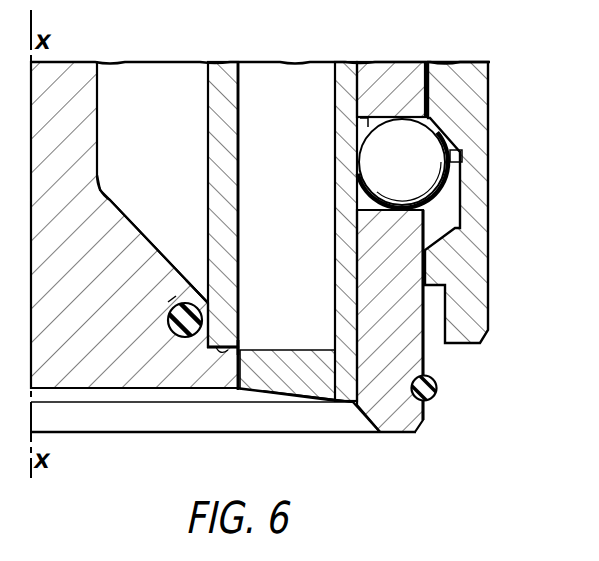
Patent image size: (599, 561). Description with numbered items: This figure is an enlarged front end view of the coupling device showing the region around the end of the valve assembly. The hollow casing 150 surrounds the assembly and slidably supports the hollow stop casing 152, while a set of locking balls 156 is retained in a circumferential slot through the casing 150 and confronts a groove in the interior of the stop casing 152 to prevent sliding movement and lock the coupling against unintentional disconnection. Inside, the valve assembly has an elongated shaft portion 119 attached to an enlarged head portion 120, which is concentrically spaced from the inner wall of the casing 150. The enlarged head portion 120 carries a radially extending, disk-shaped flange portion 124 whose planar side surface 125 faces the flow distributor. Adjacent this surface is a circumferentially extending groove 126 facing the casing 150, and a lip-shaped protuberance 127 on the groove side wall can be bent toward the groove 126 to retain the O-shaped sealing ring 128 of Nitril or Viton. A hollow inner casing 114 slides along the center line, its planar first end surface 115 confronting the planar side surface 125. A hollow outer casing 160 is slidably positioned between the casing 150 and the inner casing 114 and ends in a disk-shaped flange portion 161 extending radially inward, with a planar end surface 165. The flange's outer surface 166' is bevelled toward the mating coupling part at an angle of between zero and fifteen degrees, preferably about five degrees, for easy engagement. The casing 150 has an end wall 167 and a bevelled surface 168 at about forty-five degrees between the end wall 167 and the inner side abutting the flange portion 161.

The hollow inner casing 114 is at (240, 79).
The planar first end surface 115 is at (226, 344).
The elongated shaft portion 119 is at (108, 63).
The enlarged head portion 120 is at (138, 232).
The disk-shaped flange portion 124 is at (220, 367).
The planar side surface 125 is at (240, 349).
The circumferentially extending groove 126 is at (168, 320).
The circumferentially extending protuberance 127 is at (191, 292).
The sealing ring 128 is at (173, 298).
The hollow casing 150 is at (410, 55).
The hollow stop casing 152 is at (488, 228).
The locking balls 156 is at (459, 160).
The hollow outer casing 160 is at (335, 77).
The disk-shaped flange portion 161 is at (295, 365).
The planar end surface 165 is at (97, 392).
The bevelled outer surface 166' is at (295, 429).
The end wall 167 is at (405, 433).
The bevelled surface 168 is at (365, 406).